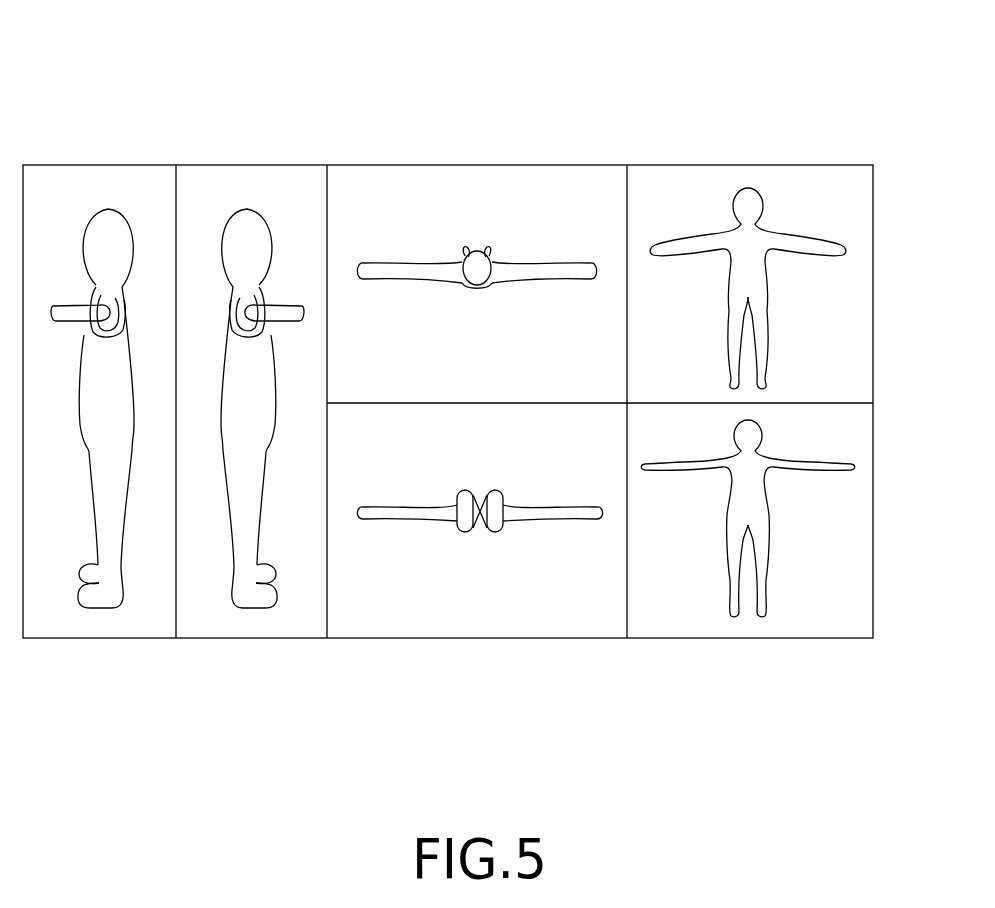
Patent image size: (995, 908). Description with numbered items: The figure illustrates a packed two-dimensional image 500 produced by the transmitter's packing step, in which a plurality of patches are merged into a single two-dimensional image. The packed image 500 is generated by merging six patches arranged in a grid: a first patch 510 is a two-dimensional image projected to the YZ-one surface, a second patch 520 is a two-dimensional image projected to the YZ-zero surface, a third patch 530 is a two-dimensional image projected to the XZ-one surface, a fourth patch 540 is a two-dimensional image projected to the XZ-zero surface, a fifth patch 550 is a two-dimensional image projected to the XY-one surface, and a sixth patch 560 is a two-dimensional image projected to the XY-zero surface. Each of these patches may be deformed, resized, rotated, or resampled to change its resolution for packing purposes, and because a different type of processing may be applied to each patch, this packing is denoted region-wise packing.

The packed 2D image 500 is at (616, 90).
The first patch 510 is at (108, 187).
The second patch 520 is at (243, 187).
The third patch 530 is at (477, 188).
The fourth patch 540 is at (477, 617).
The fifth patch 550 is at (747, 181).
The sixth patch 560 is at (745, 623).